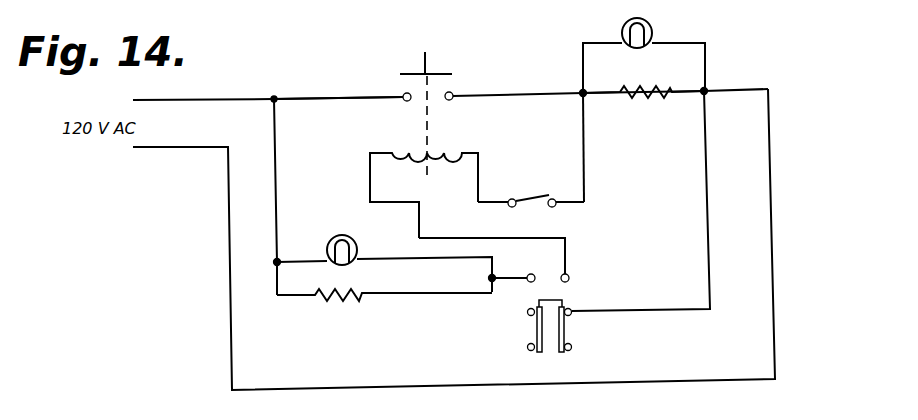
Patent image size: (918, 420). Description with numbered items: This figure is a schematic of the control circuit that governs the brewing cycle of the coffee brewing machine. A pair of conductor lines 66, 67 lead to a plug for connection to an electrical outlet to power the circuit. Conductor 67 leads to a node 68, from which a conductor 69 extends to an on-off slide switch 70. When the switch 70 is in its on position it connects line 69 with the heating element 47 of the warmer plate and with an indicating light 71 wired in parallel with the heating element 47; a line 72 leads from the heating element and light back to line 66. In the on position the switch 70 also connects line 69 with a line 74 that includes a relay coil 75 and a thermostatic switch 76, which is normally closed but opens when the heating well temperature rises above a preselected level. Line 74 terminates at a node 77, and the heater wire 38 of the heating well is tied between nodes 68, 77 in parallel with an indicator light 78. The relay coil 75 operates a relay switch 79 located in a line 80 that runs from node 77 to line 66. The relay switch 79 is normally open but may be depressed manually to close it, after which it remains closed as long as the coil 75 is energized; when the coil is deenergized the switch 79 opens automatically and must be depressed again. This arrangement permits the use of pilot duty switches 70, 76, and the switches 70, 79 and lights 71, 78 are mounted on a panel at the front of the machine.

The conductor line 66 is at (215, 97).
The line 80 is at (349, 97).
The relay switch 79 is at (438, 77).
The indicator light 78 is at (648, 19).
The heater wire 38 is at (641, 87).
The node 77 is at (586, 97).
The node 68 is at (708, 90).
The conductor 69 is at (707, 234).
The conductor line 67 is at (228, 190).
The line 72 is at (279, 168).
The relay coil 75 is at (462, 168).
The thermostatic switch 76 is at (529, 192).
The line 74 is at (456, 238).
The indicating light 71 is at (347, 218).
The heating element 47 is at (362, 297).
The on-off slide switch 70 is at (522, 328).